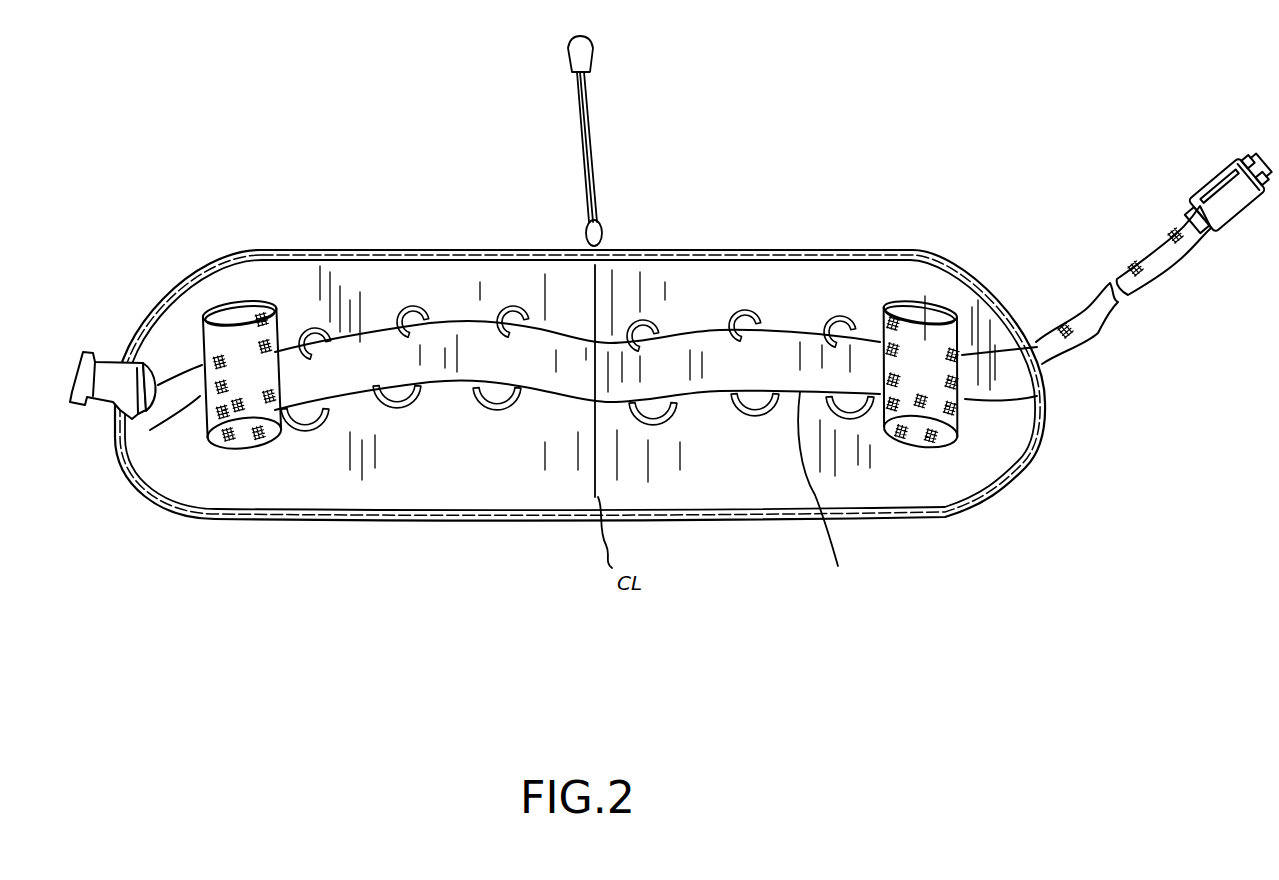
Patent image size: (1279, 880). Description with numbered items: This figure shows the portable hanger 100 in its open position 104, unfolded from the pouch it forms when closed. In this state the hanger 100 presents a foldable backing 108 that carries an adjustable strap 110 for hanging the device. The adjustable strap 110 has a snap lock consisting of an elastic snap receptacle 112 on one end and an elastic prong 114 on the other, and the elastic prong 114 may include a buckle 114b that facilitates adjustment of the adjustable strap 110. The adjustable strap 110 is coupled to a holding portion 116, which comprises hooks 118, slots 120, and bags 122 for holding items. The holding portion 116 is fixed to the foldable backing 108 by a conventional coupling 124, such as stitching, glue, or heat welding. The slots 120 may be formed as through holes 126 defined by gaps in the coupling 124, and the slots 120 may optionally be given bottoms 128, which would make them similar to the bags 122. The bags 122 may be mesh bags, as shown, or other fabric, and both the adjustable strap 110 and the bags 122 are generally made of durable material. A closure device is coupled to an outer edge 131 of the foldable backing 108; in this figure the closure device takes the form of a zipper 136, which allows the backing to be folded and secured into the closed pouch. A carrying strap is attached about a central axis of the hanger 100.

The portable hanger 100 is at (636, 630).
The open position 104 is at (752, 522).
The foldable backing 108 is at (510, 522).
The adjustable strap 110 is at (1072, 308).
The elastic snap receptacle 112 is at (91, 352).
The elastic prong 114 is at (1210, 184).
The buckle 114b is at (1222, 170).
The holding portion 116 is at (800, 350).
The hooks 118 is at (404, 400).
The slots 120 is at (462, 326).
The bags 122 is at (235, 445).
The coupling 124 is at (652, 482).
The through holes 126 is at (690, 315).
The bottoms 128 is at (832, 496).
The outer edge 131 is at (220, 272).
The zipper 136 is at (580, 240).